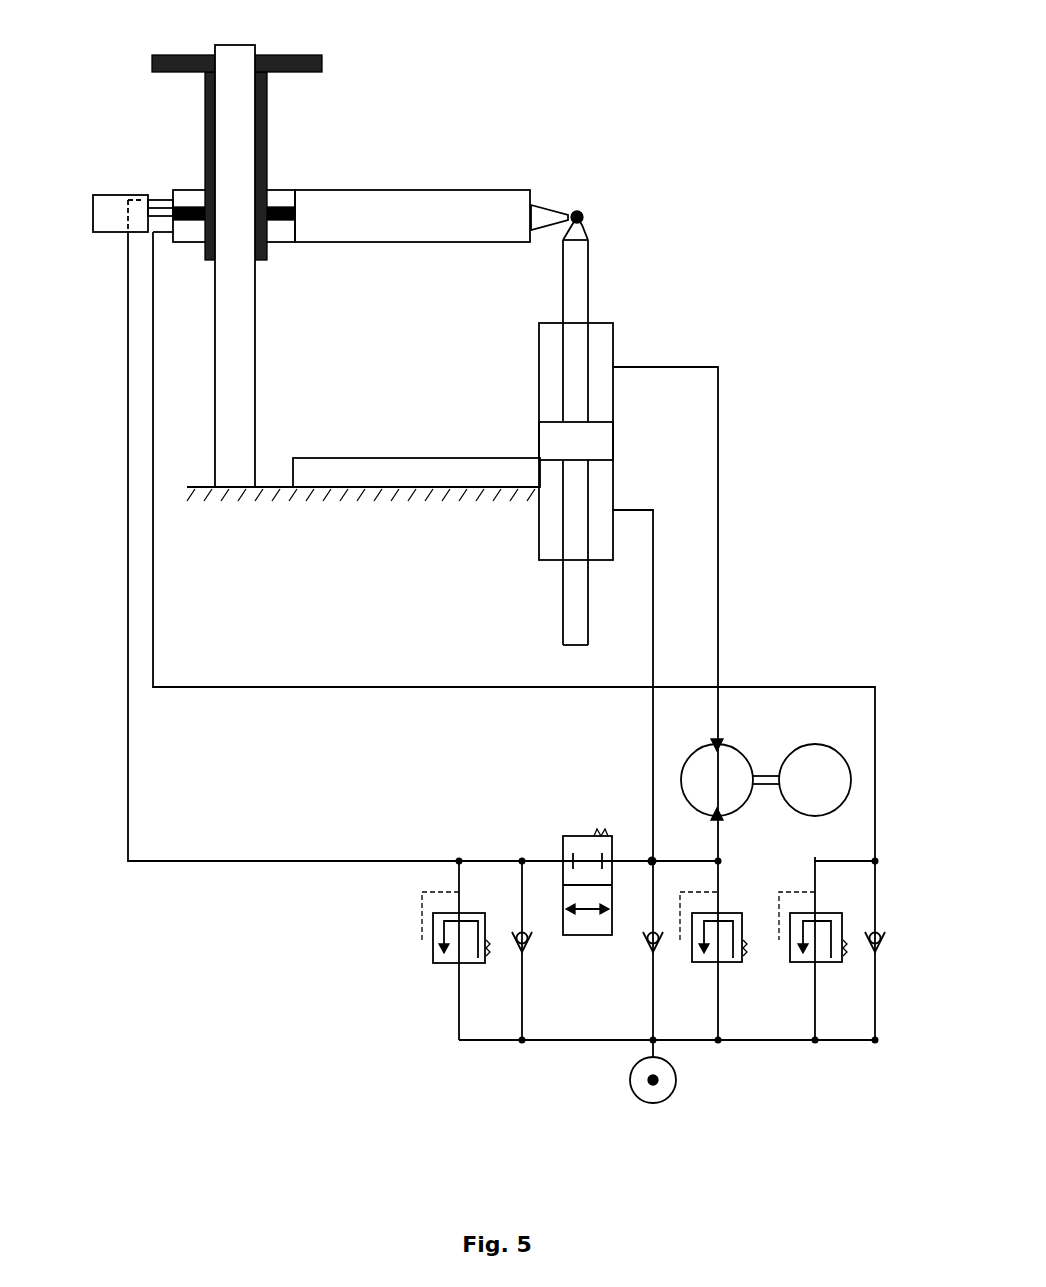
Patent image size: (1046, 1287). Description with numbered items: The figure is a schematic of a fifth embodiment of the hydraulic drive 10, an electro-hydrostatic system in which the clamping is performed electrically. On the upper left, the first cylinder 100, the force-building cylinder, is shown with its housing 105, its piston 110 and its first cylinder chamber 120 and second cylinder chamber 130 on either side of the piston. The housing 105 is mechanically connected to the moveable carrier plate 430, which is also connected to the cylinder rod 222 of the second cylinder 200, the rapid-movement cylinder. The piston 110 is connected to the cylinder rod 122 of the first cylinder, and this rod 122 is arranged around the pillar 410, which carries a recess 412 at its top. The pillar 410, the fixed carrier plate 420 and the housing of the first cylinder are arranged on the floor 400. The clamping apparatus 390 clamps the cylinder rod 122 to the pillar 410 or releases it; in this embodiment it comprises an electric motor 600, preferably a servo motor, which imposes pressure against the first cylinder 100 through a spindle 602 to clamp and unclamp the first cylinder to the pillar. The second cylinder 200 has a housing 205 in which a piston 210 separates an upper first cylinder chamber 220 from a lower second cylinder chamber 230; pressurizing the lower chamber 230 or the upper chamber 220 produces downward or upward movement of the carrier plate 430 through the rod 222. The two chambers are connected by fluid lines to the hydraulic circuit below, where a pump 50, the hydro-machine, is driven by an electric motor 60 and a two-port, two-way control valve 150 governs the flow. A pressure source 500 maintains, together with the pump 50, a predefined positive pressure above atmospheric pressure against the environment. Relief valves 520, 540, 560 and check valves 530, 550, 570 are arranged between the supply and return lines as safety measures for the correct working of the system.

The hydraulic drive 10 is at (700, 76).
The pump 50 is at (750, 742).
The electric motor 60 is at (814, 742).
The first cylinder 100 is at (190, 252).
The housing of the first cylinder 105 is at (329, 216).
The piston 110 is at (190, 209).
The first cylinder chamber 120 is at (280, 242).
The cylinder rod 122 is at (204, 131).
The second cylinder chamber 130 is at (298, 221).
The 2-port/2-way control valve 150 is at (565, 830).
The second cylinder 200 is at (617, 320).
The housing 205 is at (540, 441).
The piston 210 is at (600, 444).
The first cylinder chamber 220 is at (598, 403).
The cylinder rod 222 is at (563, 300).
The second cylinder chamber 230 is at (600, 491).
The clamping apparatus 390 is at (80, 157).
The floor 400 is at (456, 536).
The pillar 410 is at (238, 402).
The recess 412 is at (199, 59).
The fixed carrier plate 420 is at (370, 470).
The moveable carrier plate 430 is at (403, 232).
The pressure source 500 is at (688, 1097).
The relief valve 520 is at (449, 968).
The check valve 530 is at (532, 960).
The relief valve 540 is at (702, 968).
The check valve 550 is at (641, 960).
The relief valve 560 is at (803, 968).
The check valve 570 is at (868, 960).
The electric motor 600 is at (103, 234).
The spindle 602 is at (160, 200).